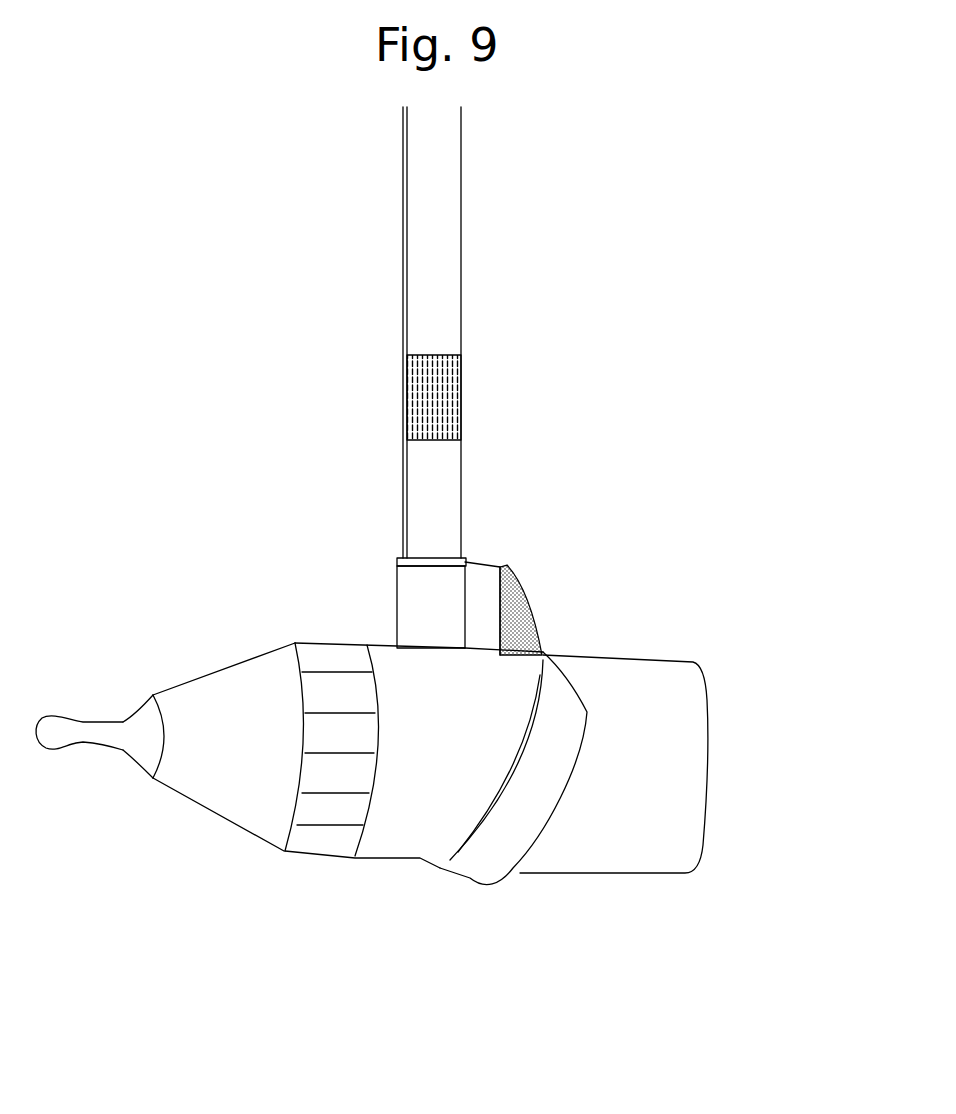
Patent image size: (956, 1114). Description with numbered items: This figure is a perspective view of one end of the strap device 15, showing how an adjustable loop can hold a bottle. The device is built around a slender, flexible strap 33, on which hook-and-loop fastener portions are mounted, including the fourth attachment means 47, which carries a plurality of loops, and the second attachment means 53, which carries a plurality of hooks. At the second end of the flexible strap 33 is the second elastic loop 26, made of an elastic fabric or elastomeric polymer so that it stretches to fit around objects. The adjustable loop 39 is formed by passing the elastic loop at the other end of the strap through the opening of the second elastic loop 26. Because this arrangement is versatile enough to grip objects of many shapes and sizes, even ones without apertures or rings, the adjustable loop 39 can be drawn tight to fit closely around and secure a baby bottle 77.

The strap device 15 is at (348, 327).
The flexible strap 33 is at (443, 253).
The fourth attachment means 47 is at (407, 432).
The second elastic loop 26 is at (418, 620).
The second attachment means 53 is at (500, 563).
The adjustable loop 39 is at (485, 872).
The baby bottle 77 is at (187, 843).